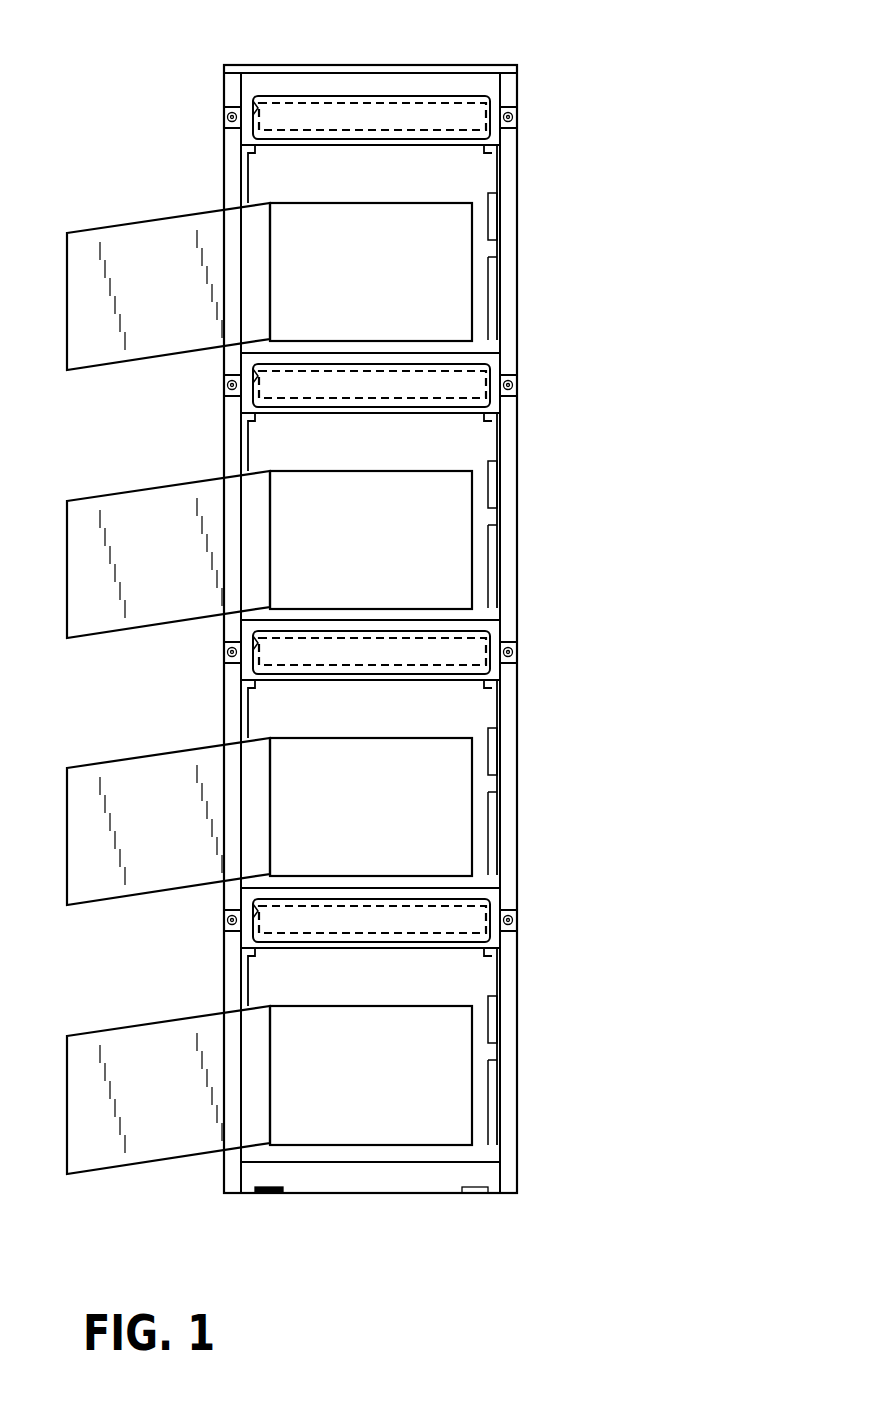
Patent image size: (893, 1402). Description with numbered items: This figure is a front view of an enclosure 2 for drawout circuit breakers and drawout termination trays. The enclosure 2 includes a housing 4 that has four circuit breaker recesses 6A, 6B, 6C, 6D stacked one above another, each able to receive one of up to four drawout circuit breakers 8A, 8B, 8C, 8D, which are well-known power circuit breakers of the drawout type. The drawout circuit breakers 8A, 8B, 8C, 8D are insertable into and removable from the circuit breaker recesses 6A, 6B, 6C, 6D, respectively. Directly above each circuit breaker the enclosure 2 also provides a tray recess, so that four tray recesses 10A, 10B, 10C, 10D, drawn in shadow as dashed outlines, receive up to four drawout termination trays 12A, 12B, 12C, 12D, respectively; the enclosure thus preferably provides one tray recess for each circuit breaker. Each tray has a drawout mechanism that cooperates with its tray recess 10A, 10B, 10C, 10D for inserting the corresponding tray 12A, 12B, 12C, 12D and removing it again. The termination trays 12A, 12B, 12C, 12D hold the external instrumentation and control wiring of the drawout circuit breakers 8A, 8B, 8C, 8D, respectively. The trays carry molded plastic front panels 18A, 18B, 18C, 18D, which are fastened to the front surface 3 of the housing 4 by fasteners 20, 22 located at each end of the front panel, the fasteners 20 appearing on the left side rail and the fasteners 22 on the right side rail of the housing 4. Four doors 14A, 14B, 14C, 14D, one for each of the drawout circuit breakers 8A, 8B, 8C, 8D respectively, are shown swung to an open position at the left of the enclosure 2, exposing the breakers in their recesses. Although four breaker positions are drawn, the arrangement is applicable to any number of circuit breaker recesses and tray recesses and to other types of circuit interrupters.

The enclosure 2 is at (508, 1257).
The front surface 3 is at (402, 85).
The housing 4 is at (518, 66).
The circuit breaker recess 6A is at (468, 293).
The circuit breaker recess 6B is at (468, 562).
The circuit breaker recess 6C is at (468, 830).
The circuit breaker recess 6D is at (468, 1062).
The drawout circuit breaker 8A is at (450, 316).
The drawout circuit breaker 8B is at (450, 584).
The drawout circuit breaker 8C is at (450, 852).
The drawout circuit breaker 8D is at (450, 1122).
The tray recess 10A is at (257, 104).
The tray recess 10B is at (257, 372).
The tray recess 10C is at (257, 640).
The tray recess 10D is at (257, 908).
The drawout termination tray 12A is at (390, 134).
The drawout termination tray 12B is at (390, 402).
The drawout termination tray 12C is at (390, 669).
The drawout termination tray 12D is at (390, 937).
The door 14A is at (168, 242).
The door 14B is at (148, 503).
The door 14C is at (128, 770).
The door 14D is at (117, 1047).
The molded plastic front panel 18A is at (438, 122).
The molded plastic front panel 18B is at (453, 381).
The molded plastic front panel 18C is at (437, 656).
The molded plastic front panel 18D is at (428, 924).
The fastener 20 is at (226, 106).
The fastener 22 is at (516, 117).